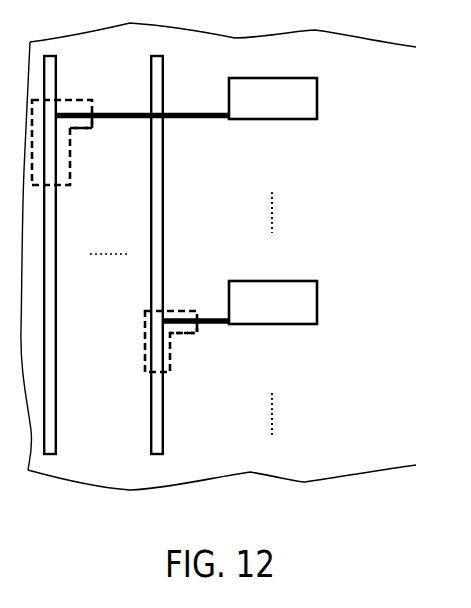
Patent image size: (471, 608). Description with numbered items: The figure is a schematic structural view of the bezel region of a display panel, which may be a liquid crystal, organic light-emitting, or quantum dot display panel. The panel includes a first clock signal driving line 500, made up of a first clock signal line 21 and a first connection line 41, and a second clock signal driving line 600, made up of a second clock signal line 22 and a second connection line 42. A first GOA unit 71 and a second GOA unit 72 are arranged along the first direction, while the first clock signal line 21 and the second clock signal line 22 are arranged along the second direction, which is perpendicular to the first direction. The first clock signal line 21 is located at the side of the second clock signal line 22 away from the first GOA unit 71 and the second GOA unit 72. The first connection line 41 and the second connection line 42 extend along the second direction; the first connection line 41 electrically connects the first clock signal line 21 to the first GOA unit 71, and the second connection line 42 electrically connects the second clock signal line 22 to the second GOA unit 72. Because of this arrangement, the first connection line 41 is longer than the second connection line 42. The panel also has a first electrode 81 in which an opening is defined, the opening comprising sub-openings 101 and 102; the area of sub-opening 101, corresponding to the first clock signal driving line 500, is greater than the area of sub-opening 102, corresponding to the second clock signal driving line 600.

The first clock signal line 21 is at (53, 207).
The second clock signal line 22 is at (157, 394).
The first connection line 41 is at (73, 130).
The second connection line 42 is at (212, 328).
The first GOA unit 71 is at (300, 97).
The second GOA unit 72 is at (300, 297).
The first electrode 81 is at (312, 483).
The sub-opening 101 is at (92, 100).
The sub-opening 102 is at (168, 309).
The first clock signal driving line 500 is at (106, 152).
The second clock signal driving line 600 is at (257, 343).